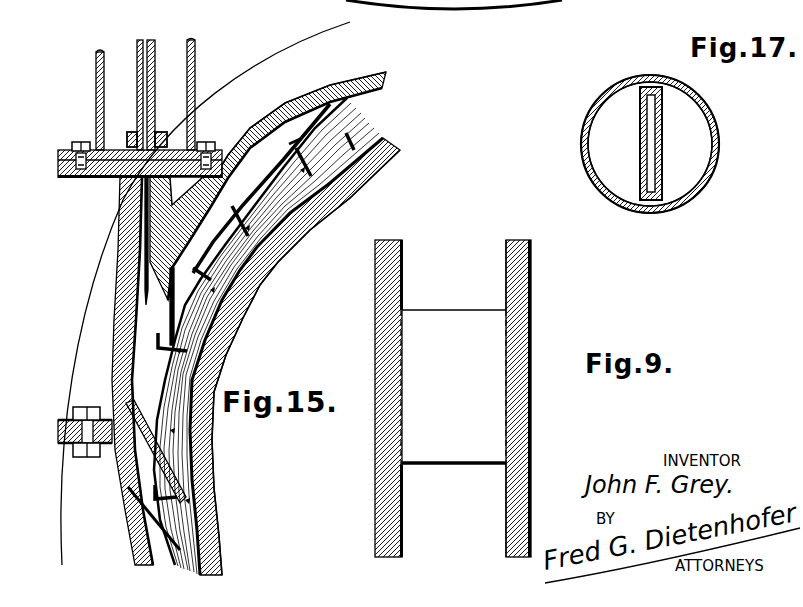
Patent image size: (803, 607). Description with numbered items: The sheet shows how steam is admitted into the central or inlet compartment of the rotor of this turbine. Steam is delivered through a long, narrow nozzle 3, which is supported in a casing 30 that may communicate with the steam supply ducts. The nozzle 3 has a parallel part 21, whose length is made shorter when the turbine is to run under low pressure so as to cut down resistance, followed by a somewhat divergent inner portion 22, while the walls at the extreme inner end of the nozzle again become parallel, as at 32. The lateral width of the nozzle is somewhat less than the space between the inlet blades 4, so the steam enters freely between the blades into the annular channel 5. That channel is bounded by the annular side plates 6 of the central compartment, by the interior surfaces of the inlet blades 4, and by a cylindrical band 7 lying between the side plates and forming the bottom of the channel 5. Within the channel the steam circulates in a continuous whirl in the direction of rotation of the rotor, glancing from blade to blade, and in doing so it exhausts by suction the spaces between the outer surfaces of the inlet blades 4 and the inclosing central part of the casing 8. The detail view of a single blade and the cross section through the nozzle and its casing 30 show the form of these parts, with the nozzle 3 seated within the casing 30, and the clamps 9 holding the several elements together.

In FIG. 15, the nozzle 3 is at (137, 98).
In FIG. 17, the nozzle 3 is at (640, 148).
In FIG. 15, the inlet blade 4 is at (152, 452).
In FIG. 9, the inlet blade 4 is at (497, 338).
In FIG. 15, the annular channel 5 is at (180, 450).
In FIG. 15, the annular side plate 6 is at (131, 385).
In FIG. 9, the annular side plate 6 is at (522, 288).
In FIG. 15, the cylindrical band 7 is at (197, 481).
In FIG. 15, the central part of the casing 8 is at (70, 353).
In FIG. 15, the clamp 9 is at (183, 513).
In FIG. 15, the parallel part of the nozzle 21 is at (137, 78).
In FIG. 15, the divergent inner portion 22 is at (140, 195).
In FIG. 15, the casing 30 is at (107, 116).
In FIG. 17, the casing 30 is at (586, 132).
In FIG. 15, the parallel wall at the inner end of the nozzle 32 is at (146, 294).